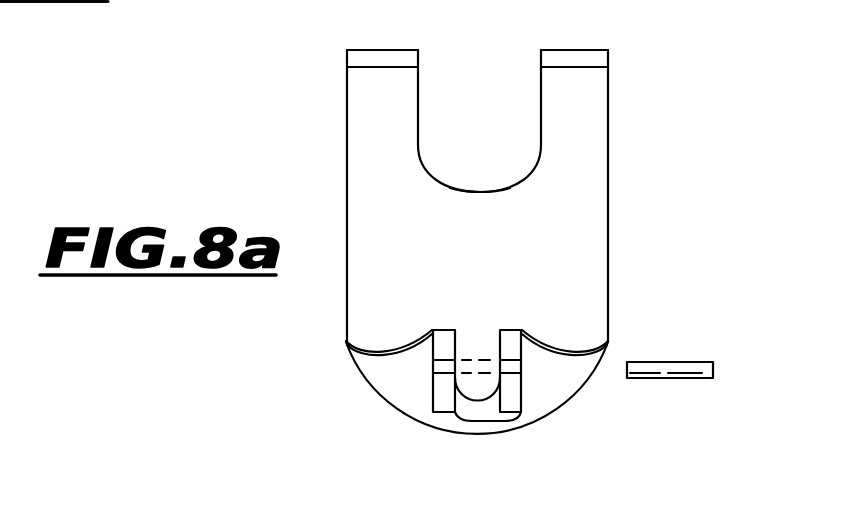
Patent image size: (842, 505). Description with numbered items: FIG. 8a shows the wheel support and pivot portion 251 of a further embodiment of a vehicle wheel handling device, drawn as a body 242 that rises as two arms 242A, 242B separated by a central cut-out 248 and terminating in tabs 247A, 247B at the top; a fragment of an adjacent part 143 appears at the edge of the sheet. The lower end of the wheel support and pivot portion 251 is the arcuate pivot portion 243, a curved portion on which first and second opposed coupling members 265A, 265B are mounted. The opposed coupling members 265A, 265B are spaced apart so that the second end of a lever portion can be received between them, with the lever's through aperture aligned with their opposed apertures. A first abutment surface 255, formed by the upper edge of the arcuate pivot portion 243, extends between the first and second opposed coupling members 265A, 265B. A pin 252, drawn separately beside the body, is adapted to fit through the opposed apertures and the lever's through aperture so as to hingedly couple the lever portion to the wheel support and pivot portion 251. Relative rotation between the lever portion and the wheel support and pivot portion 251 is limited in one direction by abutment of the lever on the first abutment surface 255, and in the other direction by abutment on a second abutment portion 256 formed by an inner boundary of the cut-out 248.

The adjacent figure element (partial) 143 is at (109, 6).
The clip body 242 is at (585, 279).
The left arm of clip body 242A is at (367, 140).
The right arm of clip body 242B is at (588, 120).
The arcuate pivot portion 243 is at (565, 385).
The left tab 247A is at (360, 57).
The right tab 247B is at (611, 17).
The cut-out 248 is at (479, 121).
The wheel support and pivot portion 251 is at (640, 97).
The pin 252 is at (657, 366).
The first abutment surface 255 is at (482, 413).
The second abutment portion 256 is at (481, 192).
The first opposed coupling member 265A is at (443, 403).
The second opposed coupling member 265B is at (511, 403).